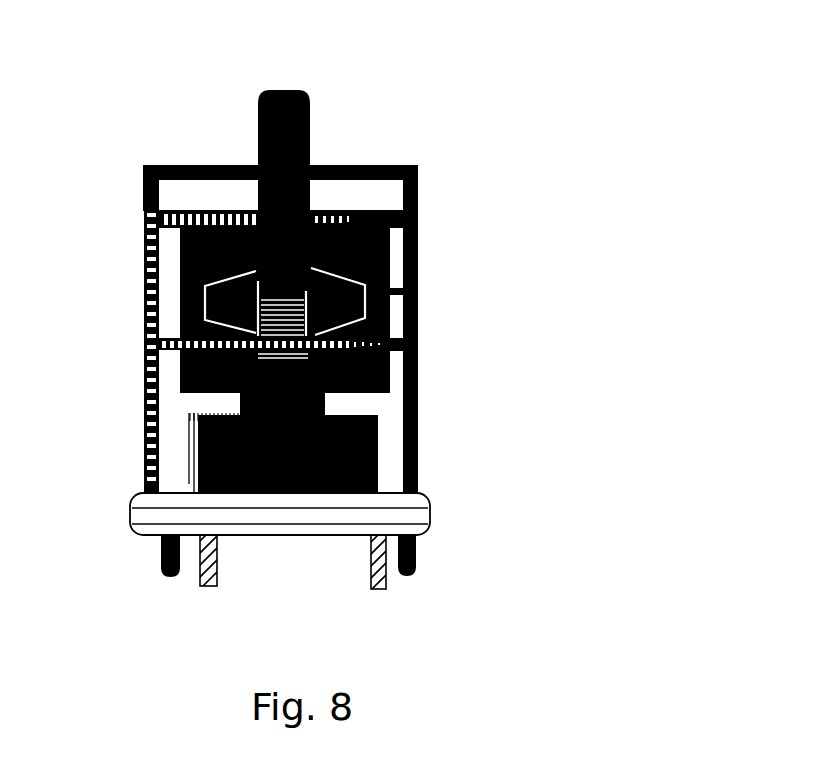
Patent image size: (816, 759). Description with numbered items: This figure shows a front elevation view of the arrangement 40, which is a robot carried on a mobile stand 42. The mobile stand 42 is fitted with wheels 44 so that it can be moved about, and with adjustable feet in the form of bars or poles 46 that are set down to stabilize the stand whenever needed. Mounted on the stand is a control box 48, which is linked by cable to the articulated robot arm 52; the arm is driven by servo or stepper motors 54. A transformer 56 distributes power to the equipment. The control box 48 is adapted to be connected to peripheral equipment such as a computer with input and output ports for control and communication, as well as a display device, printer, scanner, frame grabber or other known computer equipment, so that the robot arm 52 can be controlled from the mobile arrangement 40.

The arrangement 40 is at (462, 121).
The mobile stand 42 is at (123, 492).
The wheels 44 is at (153, 542).
The poles 46 is at (210, 550).
The control box 48 is at (172, 232).
The articulated robot arm 52 is at (250, 120).
The servo or stepper motors 54 is at (410, 280).
The transformer 56 is at (370, 418).